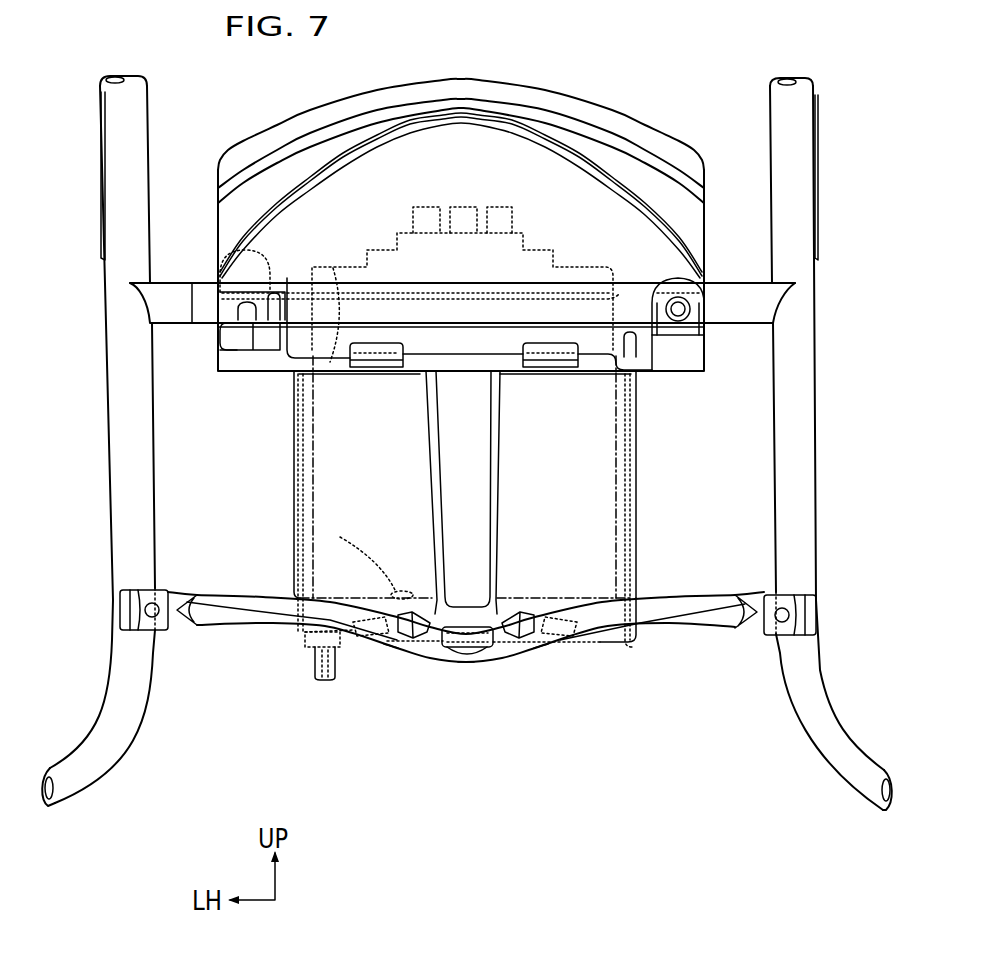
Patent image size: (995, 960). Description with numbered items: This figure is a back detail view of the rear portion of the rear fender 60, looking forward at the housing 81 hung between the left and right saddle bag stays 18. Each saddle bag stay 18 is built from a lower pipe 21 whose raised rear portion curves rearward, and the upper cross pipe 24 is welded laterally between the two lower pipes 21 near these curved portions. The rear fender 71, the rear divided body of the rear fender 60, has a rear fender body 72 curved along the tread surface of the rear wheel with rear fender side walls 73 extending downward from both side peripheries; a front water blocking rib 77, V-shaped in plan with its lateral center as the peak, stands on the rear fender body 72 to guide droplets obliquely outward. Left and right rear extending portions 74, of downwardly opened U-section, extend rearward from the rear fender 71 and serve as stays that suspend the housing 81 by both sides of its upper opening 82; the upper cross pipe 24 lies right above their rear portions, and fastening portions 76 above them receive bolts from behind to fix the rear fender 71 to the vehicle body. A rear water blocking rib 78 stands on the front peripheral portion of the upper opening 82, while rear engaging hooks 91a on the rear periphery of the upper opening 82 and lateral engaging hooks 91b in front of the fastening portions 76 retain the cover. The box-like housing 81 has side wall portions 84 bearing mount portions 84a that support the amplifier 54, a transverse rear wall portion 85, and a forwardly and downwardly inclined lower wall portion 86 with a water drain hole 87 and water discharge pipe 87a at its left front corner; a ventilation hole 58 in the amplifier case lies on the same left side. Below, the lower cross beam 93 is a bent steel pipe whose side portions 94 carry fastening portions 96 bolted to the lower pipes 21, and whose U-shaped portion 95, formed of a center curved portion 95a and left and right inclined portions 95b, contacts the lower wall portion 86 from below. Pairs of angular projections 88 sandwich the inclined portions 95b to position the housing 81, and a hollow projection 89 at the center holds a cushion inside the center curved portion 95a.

The saddle bag stay 18 is at (846, 337).
The lower pipe 21 is at (466, 443).
The upper cross pipe 24 is at (745, 290).
The amplifier 54 is at (645, 448).
The ventilation hole 58 is at (340, 537).
The rear fender 60 is at (670, 138).
The rear fender 71 is at (497, 107).
The rear fender body 72 is at (607, 123).
The rear fender side wall 73 is at (218, 363).
The rear extending portion 74 is at (231, 342).
The fastening portion 76 is at (246, 262).
The front water blocking rib 77 is at (550, 143).
The rear water blocking rib 78 is at (537, 297).
The housing 81 is at (644, 482).
The upper opening 82 is at (328, 350).
The side wall portion 84 is at (294, 465).
The mount portion 84a is at (296, 402).
The rear wall portion 85 is at (595, 520).
The lower wall portion 86 is at (483, 618).
The water drain hole 87 is at (303, 638).
The water discharge pipe 87a is at (317, 668).
The angular projection 88 is at (373, 640).
The hollow projection 89 is at (453, 653).
The rear engaging hook 91a is at (366, 368).
The lateral engaging hook 91b is at (240, 306).
The lower cross beam 93 is at (672, 640).
The side portion 94 is at (227, 620).
The U-shaped portion 95 is at (469, 710).
The center curved portion 95a is at (470, 660).
The inclined portion 95b is at (391, 644).
The fastening portion 96 is at (166, 630).